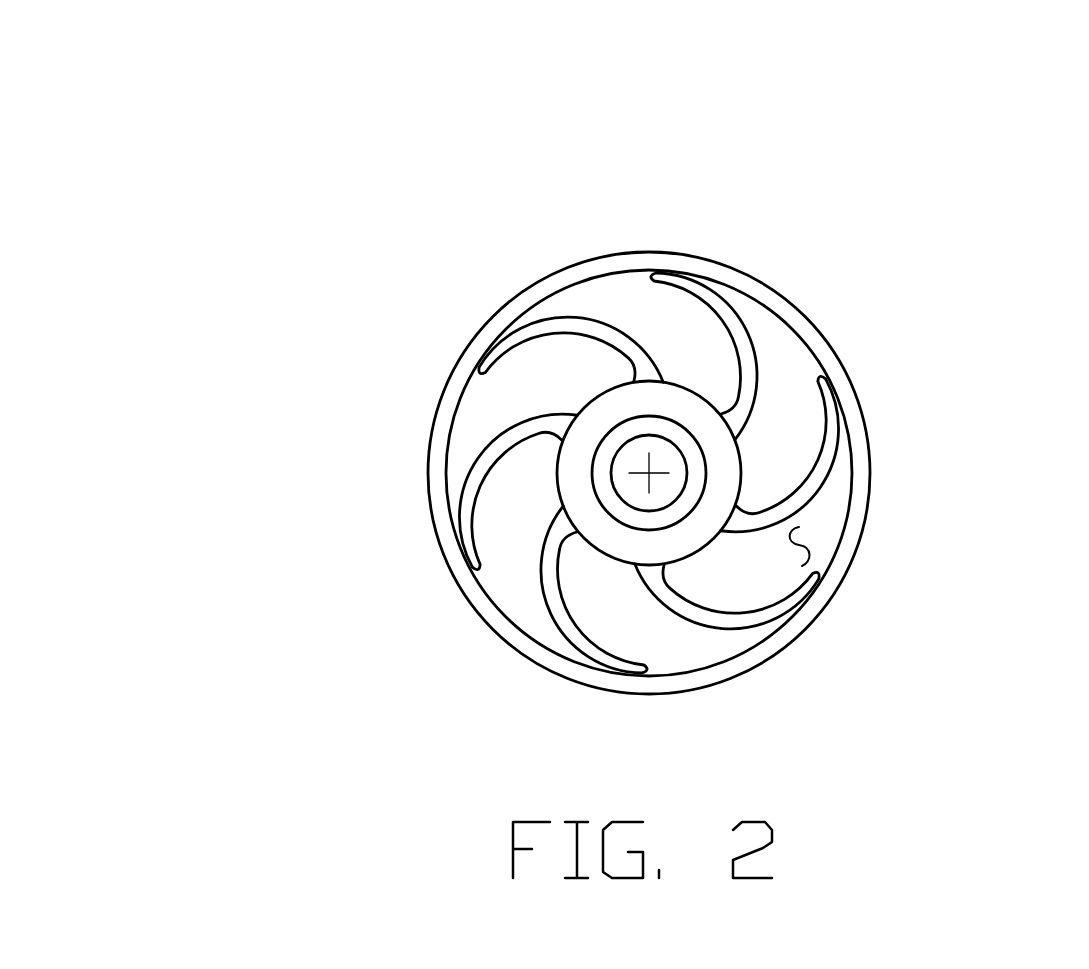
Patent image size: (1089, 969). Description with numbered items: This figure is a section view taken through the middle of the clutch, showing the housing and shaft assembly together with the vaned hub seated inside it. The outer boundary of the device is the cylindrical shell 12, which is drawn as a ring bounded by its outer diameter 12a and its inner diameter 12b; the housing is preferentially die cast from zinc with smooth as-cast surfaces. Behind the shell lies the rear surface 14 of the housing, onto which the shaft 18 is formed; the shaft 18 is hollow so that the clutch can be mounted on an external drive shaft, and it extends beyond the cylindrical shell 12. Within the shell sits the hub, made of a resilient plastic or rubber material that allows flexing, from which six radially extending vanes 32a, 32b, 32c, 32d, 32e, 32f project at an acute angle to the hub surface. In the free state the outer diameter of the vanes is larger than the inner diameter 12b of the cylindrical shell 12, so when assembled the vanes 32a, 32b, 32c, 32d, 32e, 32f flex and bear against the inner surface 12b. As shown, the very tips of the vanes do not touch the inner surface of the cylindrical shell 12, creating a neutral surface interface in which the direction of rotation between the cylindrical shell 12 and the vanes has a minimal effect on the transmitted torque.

The cylindrical shell 12 is at (634, 378).
The outer diameter 12a is at (609, 254).
The inner diameter 12b is at (668, 265).
The rear surface 14 is at (958, 492).
The shaft 18 is at (712, 783).
The vane 32a is at (808, 165).
The vane 32b is at (962, 363).
The vane 32c is at (905, 690).
The vane 32d is at (462, 770).
The vane 32e is at (462, 516).
The vane 32f is at (495, 340).